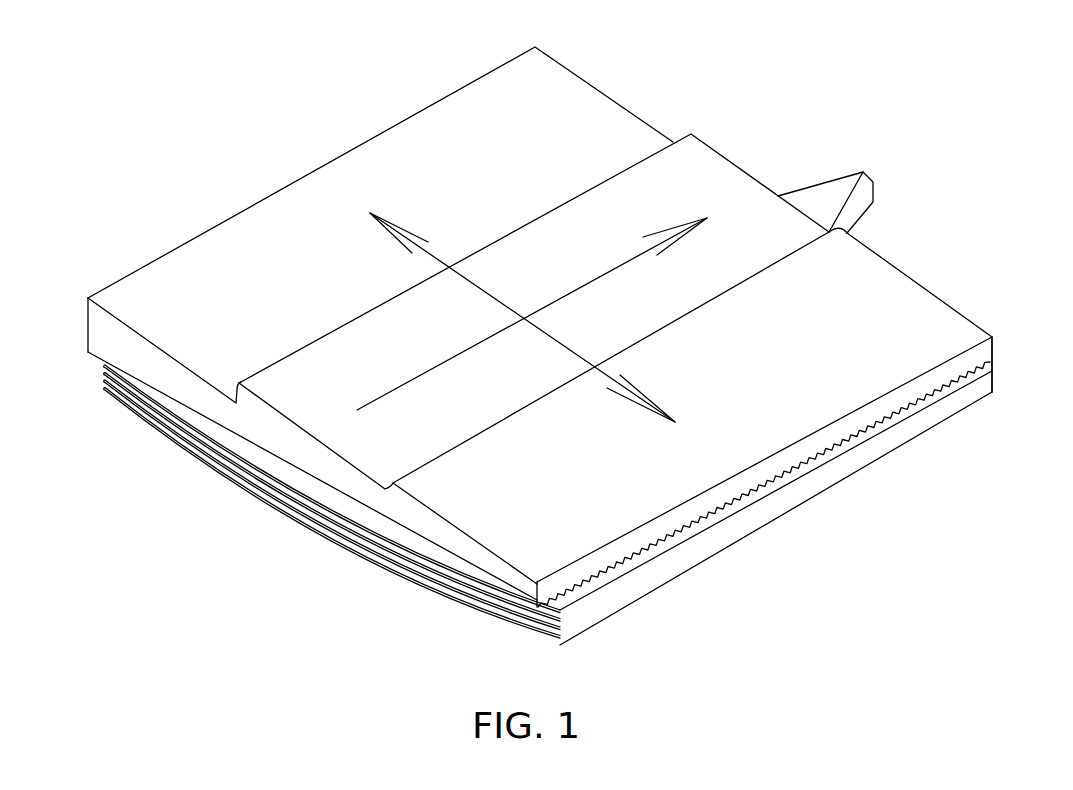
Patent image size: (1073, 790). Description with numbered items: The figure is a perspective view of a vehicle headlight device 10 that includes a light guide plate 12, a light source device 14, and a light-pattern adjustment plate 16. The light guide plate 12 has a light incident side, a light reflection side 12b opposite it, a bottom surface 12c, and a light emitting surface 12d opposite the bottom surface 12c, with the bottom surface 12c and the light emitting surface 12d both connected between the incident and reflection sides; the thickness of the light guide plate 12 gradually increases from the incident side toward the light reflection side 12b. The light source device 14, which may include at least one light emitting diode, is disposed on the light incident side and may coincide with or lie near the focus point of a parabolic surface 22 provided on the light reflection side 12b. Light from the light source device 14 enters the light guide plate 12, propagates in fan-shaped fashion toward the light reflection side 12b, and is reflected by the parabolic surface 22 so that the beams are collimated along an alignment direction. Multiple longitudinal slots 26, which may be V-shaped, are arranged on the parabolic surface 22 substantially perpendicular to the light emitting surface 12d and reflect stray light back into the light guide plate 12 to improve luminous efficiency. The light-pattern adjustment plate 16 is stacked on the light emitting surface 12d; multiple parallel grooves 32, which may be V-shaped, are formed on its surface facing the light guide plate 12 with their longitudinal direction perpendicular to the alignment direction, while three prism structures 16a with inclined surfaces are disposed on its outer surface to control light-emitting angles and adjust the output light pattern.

The vehicle headlight device 10 is at (100, 75).
The light guide plate 12 is at (775, 520).
The light reflection side 12b is at (332, 511).
The parabolic surface 22 is at (332, 511).
The bottom surface 12c is at (684, 575).
The light emitting surface 12d is at (648, 557).
The light source device 14 is at (828, 192).
The light-pattern adjustment plate 16 is at (310, 172).
The prism structure 16a is at (467, 531).
The longitudinal slot 26 is at (556, 641).
The groove 32 is at (836, 445).